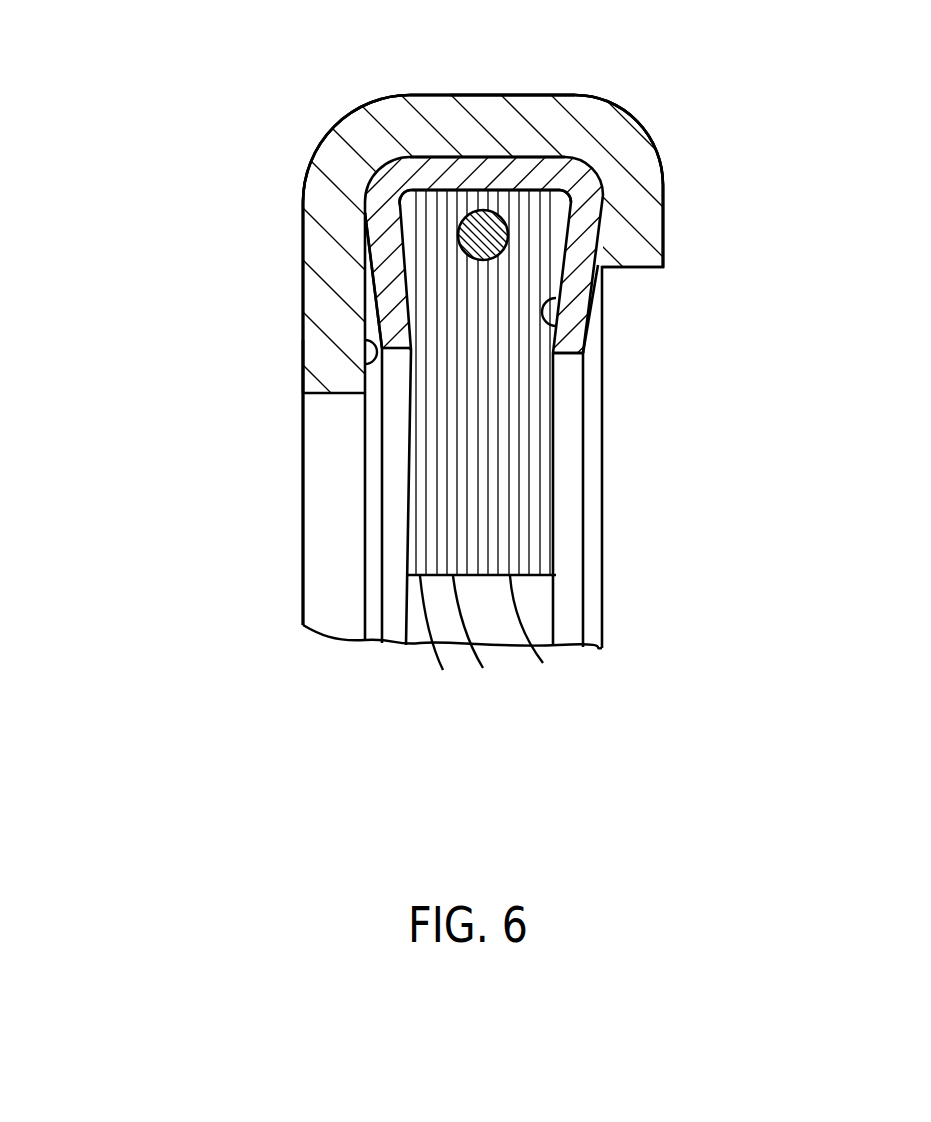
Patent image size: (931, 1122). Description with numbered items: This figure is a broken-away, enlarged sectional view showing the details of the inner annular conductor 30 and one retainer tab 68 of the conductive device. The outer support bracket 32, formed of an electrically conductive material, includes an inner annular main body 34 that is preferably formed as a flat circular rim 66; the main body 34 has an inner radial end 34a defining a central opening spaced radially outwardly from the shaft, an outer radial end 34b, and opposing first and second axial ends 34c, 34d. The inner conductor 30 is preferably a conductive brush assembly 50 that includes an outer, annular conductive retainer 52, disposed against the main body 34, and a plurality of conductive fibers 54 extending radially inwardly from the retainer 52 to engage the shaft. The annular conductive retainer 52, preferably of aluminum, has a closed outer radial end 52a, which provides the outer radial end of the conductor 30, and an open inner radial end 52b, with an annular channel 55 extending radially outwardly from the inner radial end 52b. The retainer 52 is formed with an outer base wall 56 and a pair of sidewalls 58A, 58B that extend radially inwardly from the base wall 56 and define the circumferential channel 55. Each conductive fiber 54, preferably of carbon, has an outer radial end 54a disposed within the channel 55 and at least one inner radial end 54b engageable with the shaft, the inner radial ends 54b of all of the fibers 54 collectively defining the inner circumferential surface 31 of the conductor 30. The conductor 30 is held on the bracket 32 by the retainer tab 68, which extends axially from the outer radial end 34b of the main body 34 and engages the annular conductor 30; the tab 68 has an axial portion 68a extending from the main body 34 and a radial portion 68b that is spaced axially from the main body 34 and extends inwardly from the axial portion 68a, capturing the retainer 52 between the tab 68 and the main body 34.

The inner annular conductor 30 is at (683, 330).
The inner circumferential surface 31 is at (497, 627).
The outer support bracket 32 is at (185, 312).
The inner annular main body 34 is at (300, 263).
The inner radial end of the main body 34a is at (318, 395).
The outer radial end of the main body 34b is at (333, 175).
The first axial end of the main body 34c is at (362, 366).
The second axial end of the main body 34d is at (300, 233).
The conductive brush assembly 50 is at (634, 187).
The annular conductive retainer 52 is at (590, 165).
The closed outer radial end of the retainer 52a is at (505, 155).
The open inner radial end of the retainer 52b is at (572, 365).
The conductive fibers 54 is at (420, 492).
The outer radial end of the conductive fiber 54a is at (416, 158).
The inner radial end of the conductive fiber 54b is at (508, 642).
The annular channel 55 is at (575, 320).
The outer base wall 56 is at (440, 170).
The first sidewall 58A is at (385, 290).
The second sidewall 58B is at (580, 293).
The flat circular rim 66 is at (313, 348).
The retainer tab 68 is at (490, 93).
The axial portion of the retainer tab 68a is at (535, 120).
The radial portion of the retainer tab 68b is at (655, 218).